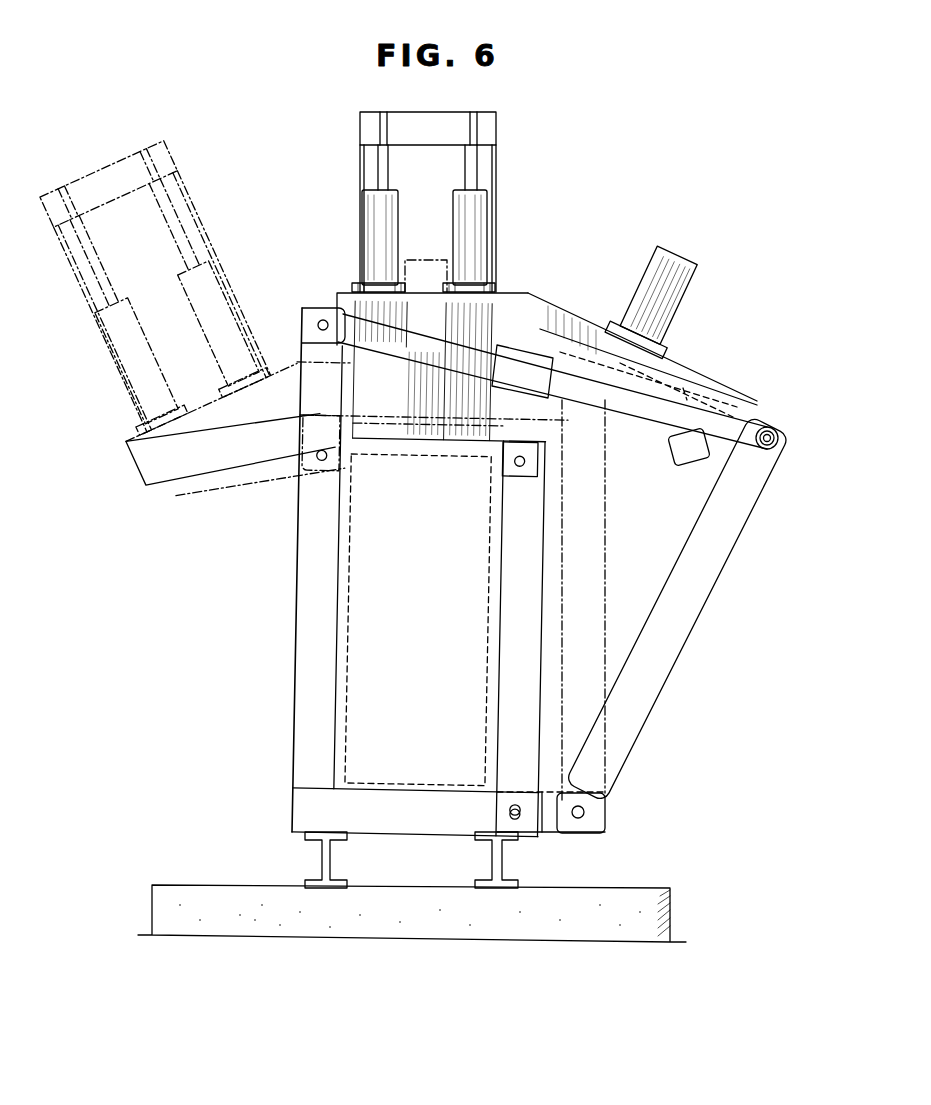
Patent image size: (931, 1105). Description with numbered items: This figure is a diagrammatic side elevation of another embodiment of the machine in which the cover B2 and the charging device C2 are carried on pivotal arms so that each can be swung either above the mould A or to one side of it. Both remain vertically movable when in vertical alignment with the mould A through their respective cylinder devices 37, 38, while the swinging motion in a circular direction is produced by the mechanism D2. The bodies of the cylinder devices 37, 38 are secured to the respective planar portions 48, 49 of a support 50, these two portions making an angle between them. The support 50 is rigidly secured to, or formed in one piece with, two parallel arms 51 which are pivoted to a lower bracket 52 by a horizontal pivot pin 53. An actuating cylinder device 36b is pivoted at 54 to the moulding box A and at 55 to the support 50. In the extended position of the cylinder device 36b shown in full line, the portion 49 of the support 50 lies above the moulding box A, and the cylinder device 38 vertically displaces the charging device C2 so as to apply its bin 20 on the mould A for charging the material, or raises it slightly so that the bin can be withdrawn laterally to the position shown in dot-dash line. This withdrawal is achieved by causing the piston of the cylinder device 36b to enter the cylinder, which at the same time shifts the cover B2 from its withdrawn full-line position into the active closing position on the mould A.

The bin 20 is at (484, 132).
The cylinder device 38 is at (470, 218).
The charging device C2 is at (450, 202).
The pivot 54 is at (321, 310).
The planar portion 49 is at (508, 303).
The support 50 is at (580, 317).
The cylinder device 37 is at (664, 283).
The planar portion 48 is at (673, 373).
The cover B2 is at (558, 381).
The pivot 55 is at (768, 427).
The actuating cylinder device 36b is at (537, 400).
The mould A is at (296, 651).
The mechanism D2 is at (677, 609).
The parallel arms 51 is at (647, 679).
The lower bracket 52 is at (548, 818).
The horizontal pivot pin 53 is at (575, 813).